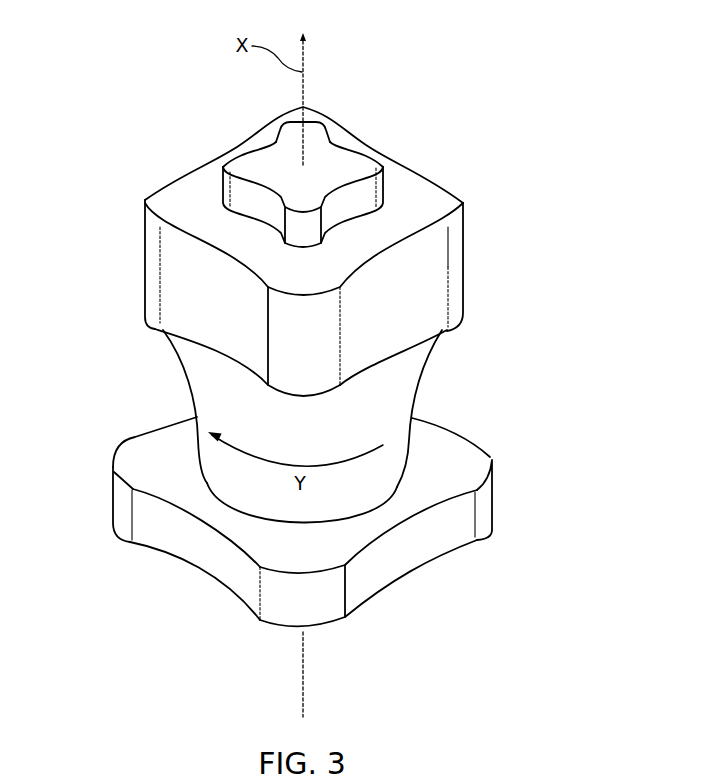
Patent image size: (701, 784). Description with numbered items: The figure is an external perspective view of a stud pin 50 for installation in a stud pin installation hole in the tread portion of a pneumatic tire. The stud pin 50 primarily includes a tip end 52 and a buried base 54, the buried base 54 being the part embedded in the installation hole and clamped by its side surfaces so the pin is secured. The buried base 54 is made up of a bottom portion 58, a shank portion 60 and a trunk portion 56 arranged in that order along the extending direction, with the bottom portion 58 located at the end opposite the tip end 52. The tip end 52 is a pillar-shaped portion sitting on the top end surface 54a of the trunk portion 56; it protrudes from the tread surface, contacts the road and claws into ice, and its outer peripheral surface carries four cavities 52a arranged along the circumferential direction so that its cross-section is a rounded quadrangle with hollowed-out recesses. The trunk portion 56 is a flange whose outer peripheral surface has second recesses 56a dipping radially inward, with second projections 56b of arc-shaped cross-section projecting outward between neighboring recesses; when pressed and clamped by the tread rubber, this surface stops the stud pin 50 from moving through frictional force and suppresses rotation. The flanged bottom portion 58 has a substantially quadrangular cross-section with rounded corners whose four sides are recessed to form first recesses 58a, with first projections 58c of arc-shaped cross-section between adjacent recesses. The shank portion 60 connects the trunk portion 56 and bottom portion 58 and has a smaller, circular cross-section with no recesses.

The stud pin 50 is at (386, 76).
The tip end 52 is at (389, 146).
The cavities 52a is at (268, 134).
The buried base 54 is at (567, 197).
The top end surface 54a is at (417, 187).
The trunk portion 56 is at (407, 257).
The second recess 56a is at (216, 148).
The second projections 56b is at (455, 230).
The bottom portion 58 is at (460, 463).
The first recess 58a is at (429, 412).
The first projections 58c is at (123, 500).
The shank portion 60 is at (407, 372).